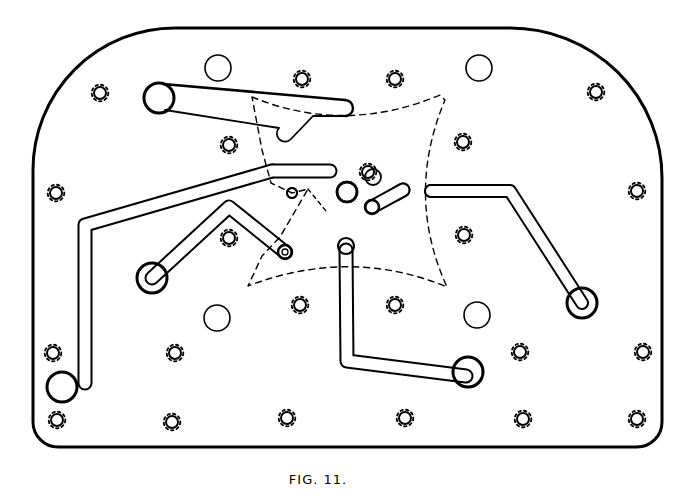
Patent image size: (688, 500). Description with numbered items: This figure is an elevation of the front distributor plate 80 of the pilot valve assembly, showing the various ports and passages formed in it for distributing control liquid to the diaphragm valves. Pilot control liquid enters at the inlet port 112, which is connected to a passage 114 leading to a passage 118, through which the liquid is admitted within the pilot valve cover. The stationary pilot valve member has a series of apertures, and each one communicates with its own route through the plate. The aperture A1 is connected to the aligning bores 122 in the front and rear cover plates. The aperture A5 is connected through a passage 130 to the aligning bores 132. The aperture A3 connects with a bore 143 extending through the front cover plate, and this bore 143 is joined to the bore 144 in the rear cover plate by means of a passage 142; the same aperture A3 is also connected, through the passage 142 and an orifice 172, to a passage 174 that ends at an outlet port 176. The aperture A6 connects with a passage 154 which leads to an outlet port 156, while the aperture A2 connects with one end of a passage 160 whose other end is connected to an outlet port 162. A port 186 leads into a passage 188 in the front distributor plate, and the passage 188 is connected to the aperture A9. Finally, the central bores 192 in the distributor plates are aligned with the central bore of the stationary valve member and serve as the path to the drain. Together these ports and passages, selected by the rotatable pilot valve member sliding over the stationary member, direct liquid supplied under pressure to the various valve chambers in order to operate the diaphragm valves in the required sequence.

The front distributor plate 80 is at (62, 113).
The inlet port 112 is at (157, 105).
The passage 114 is at (208, 104).
The passage 118 is at (342, 103).
The aligning bores 122 is at (368, 163).
The aperture A1 is at (380, 173).
The central bores 192 is at (345, 182).
The aperture A9 is at (322, 166).
The passage 154 is at (498, 185).
The aperture A6 is at (431, 188).
The aperture A3 is at (286, 193).
The bore 143 is at (271, 197).
The bore 144 is at (346, 202).
The passage 142 is at (312, 209).
The aligning bores 132 is at (373, 215).
The passage 130 is at (387, 205).
The aperture A5 is at (399, 196).
The outlet port 176 is at (153, 267).
The passage 174 is at (197, 236).
The orifice 172 is at (282, 258).
The aperture A2 is at (354, 246).
The outlet port 156 is at (586, 296).
The passage 188 is at (94, 328).
The passage 160 is at (343, 321).
The outlet port 162 is at (466, 386).
The port 186 is at (63, 395).